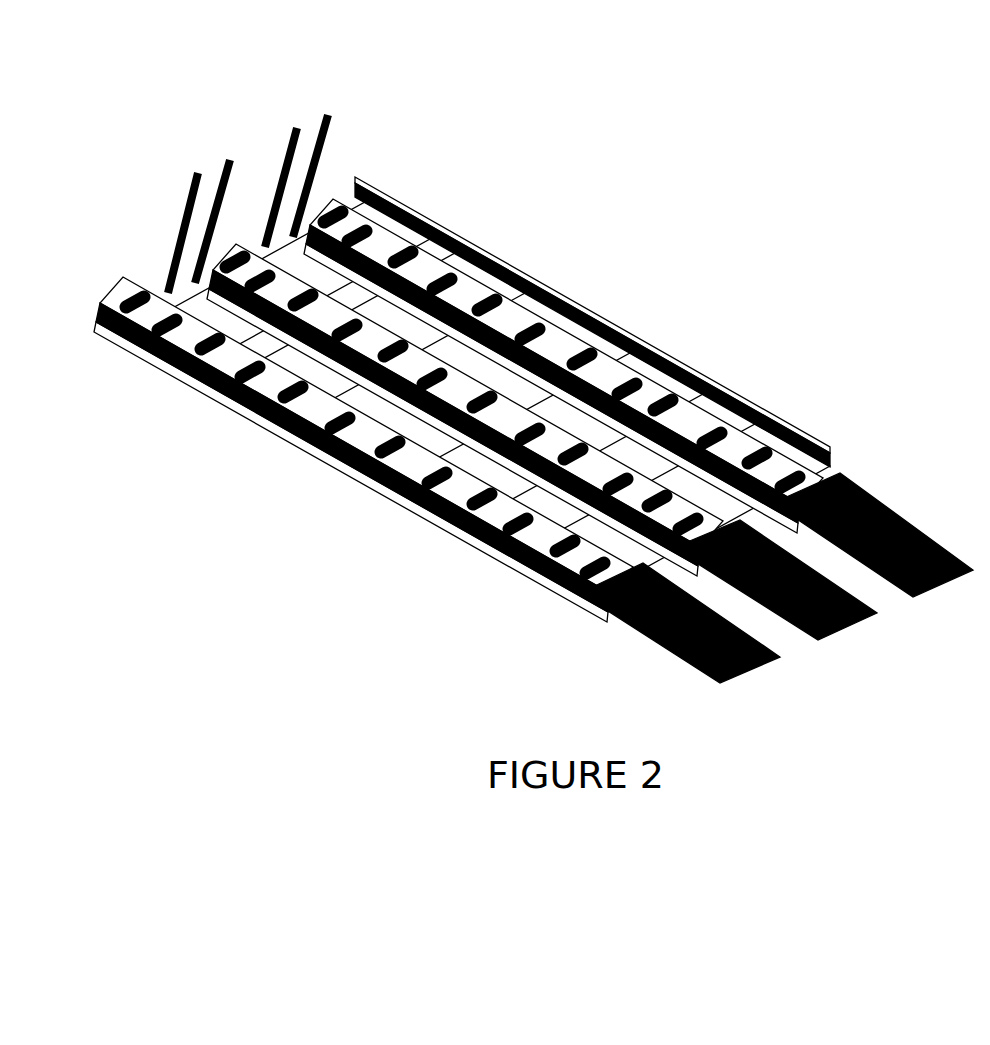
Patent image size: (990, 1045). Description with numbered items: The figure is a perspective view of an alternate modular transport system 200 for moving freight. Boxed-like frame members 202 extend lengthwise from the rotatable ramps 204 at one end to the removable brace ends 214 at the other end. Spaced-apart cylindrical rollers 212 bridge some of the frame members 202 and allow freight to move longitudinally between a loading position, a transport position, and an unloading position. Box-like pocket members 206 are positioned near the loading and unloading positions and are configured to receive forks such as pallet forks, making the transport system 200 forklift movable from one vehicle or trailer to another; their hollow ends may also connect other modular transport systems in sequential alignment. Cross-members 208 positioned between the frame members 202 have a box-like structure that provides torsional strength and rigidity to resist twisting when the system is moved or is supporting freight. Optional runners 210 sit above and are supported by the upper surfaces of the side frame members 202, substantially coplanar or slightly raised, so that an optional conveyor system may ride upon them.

The modular transport system 200 is at (716, 205).
The boxed-like frame member 202 is at (313, 232).
The rotatable ramp 204 is at (748, 670).
The box-like pocket member 206 is at (720, 475).
The cross-member 208 is at (387, 248).
The runner 210 is at (482, 268).
The cylindrical roller 212 is at (538, 325).
The removable brace end 214 is at (227, 157).